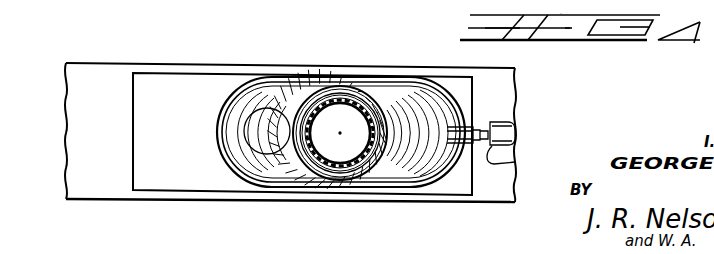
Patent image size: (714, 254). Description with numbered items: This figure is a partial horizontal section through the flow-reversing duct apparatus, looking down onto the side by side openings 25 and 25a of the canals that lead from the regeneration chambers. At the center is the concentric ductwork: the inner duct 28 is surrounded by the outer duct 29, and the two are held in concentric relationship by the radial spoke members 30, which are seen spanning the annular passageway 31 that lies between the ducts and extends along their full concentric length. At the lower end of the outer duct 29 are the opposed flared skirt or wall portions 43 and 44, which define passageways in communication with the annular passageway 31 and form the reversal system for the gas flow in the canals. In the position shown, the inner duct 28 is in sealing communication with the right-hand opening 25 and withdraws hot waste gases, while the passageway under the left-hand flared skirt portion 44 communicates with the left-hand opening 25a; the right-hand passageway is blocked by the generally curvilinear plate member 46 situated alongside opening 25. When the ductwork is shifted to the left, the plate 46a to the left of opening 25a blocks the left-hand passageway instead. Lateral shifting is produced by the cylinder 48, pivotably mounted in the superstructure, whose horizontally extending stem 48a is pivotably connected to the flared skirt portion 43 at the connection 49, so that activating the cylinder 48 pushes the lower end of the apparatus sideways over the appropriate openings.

The opening 25 is at (332, 142).
The opening 25a is at (242, 153).
The inner duct 28 is at (327, 102).
The outer duct 29 is at (352, 97).
The radial spoke members 30 is at (367, 110).
The annular passageway 31 is at (372, 163).
The flared skirt portion 43 is at (423, 102).
The flared skirt portion 44 is at (253, 95).
The curvilinear plate member 46 is at (467, 182).
The plate 46a is at (152, 180).
The cylinder 48 is at (507, 130).
The stem 48a is at (515, 162).
The pivotable connection 49 is at (465, 132).